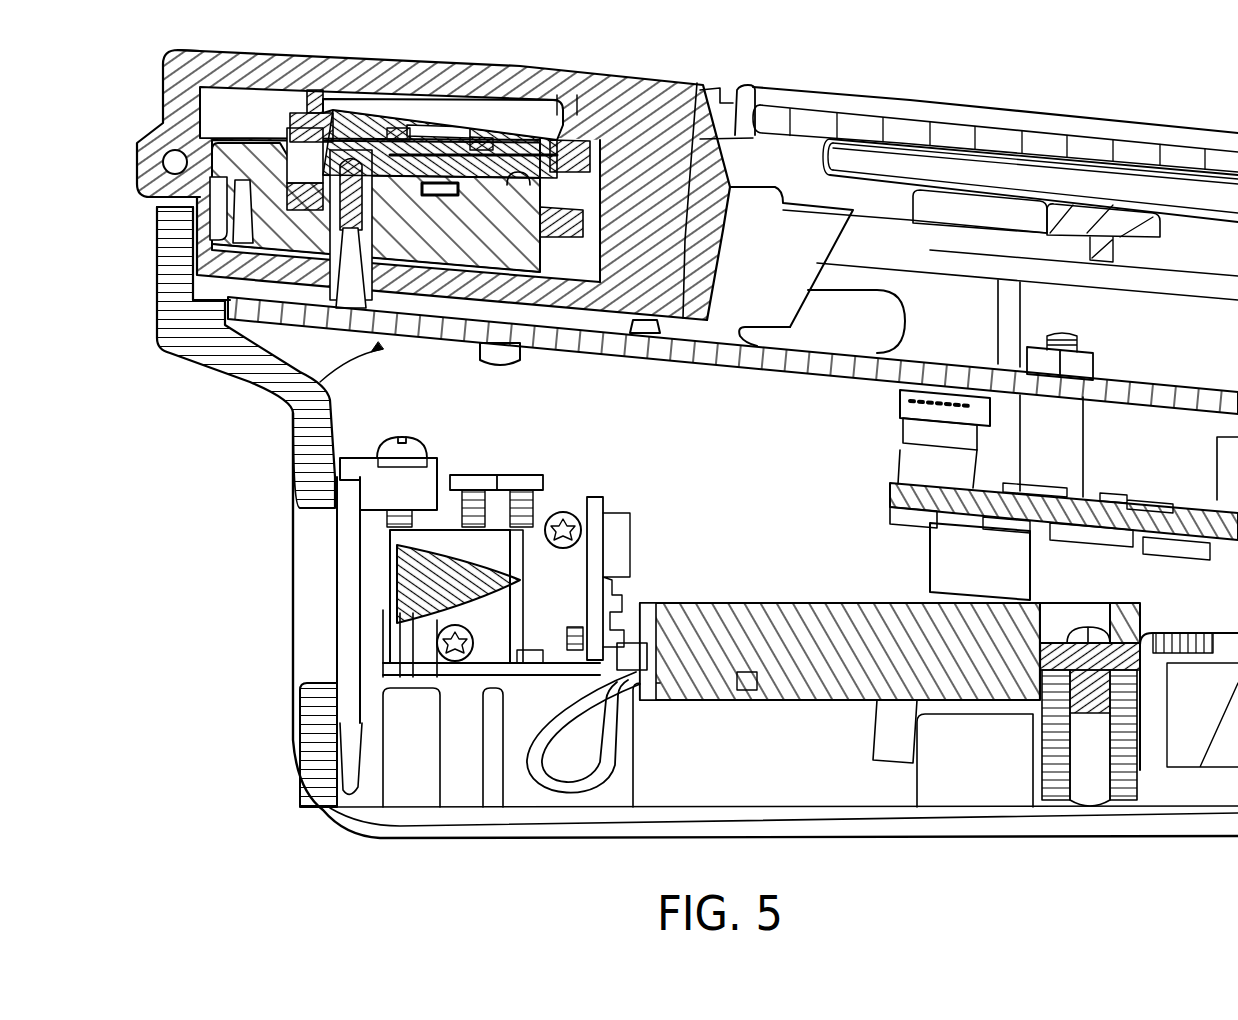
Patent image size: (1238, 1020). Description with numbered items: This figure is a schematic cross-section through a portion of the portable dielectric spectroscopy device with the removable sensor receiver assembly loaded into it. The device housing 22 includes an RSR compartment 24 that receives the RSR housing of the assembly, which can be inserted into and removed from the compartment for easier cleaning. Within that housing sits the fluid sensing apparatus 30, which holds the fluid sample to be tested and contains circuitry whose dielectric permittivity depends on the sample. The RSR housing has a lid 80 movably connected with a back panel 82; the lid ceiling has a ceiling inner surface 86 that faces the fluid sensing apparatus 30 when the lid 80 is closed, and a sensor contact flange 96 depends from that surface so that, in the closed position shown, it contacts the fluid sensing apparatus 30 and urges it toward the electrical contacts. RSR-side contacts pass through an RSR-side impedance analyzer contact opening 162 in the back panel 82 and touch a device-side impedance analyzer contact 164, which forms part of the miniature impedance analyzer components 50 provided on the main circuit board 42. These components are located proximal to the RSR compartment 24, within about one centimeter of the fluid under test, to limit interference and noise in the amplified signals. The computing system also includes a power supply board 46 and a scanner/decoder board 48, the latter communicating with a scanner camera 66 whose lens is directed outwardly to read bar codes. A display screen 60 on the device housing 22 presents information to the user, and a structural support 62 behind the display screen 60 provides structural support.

The device housing 22 is at (622, 828).
The RSR compartment 24 is at (693, 138).
The fluid sensing apparatus 30 is at (450, 128).
The main circuit board 42 is at (271, 314).
The power supply board 46 is at (905, 497).
The scanner/decoder board 48 is at (817, 690).
The miniature impedance analyzer components 50 is at (300, 395).
The display screen 60 is at (943, 173).
The structural support 62 is at (797, 163).
The scanner camera 66 is at (515, 668).
The lid 80 is at (187, 97).
The back panel 82 is at (137, 182).
The ceiling inner surface 86 is at (358, 98).
The sensor contact flange 96 is at (315, 103).
The RSR-side impedance analyzer contact opening 162 is at (232, 266).
The device-side impedance analyzer contact 164 is at (235, 298).